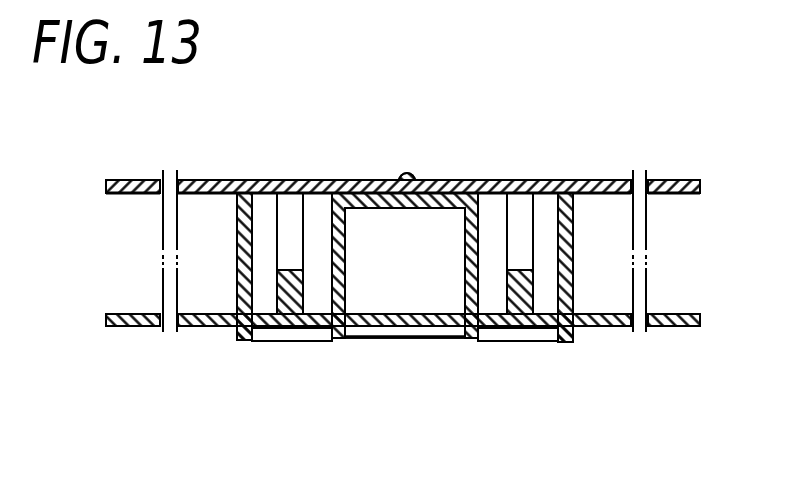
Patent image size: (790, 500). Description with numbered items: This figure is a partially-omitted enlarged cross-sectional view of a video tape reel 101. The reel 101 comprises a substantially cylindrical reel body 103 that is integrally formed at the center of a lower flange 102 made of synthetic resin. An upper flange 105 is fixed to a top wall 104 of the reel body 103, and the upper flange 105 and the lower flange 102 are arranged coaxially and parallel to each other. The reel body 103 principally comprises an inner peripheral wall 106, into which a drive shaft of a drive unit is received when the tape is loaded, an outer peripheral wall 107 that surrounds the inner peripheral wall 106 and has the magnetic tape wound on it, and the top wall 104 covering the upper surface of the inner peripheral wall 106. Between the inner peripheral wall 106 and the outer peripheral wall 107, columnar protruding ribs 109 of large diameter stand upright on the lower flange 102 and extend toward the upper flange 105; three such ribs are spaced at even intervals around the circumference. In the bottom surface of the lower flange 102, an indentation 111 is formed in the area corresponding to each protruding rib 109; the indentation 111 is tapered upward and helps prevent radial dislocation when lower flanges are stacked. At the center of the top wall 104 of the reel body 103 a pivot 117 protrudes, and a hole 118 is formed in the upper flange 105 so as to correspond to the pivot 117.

The reel 101 is at (403, 252).
The lower flange 102 is at (176, 330).
The reel body 103 is at (578, 270).
The top wall 104 is at (352, 180).
The upper flange 105 is at (195, 180).
The inner peripheral wall 106 is at (465, 268).
The outer peripheral wall 107 is at (233, 326).
The protruding ribs 109 is at (282, 232).
The indentation 111 is at (290, 341).
The pivot 117 is at (398, 173).
The hole 118 is at (410, 177).